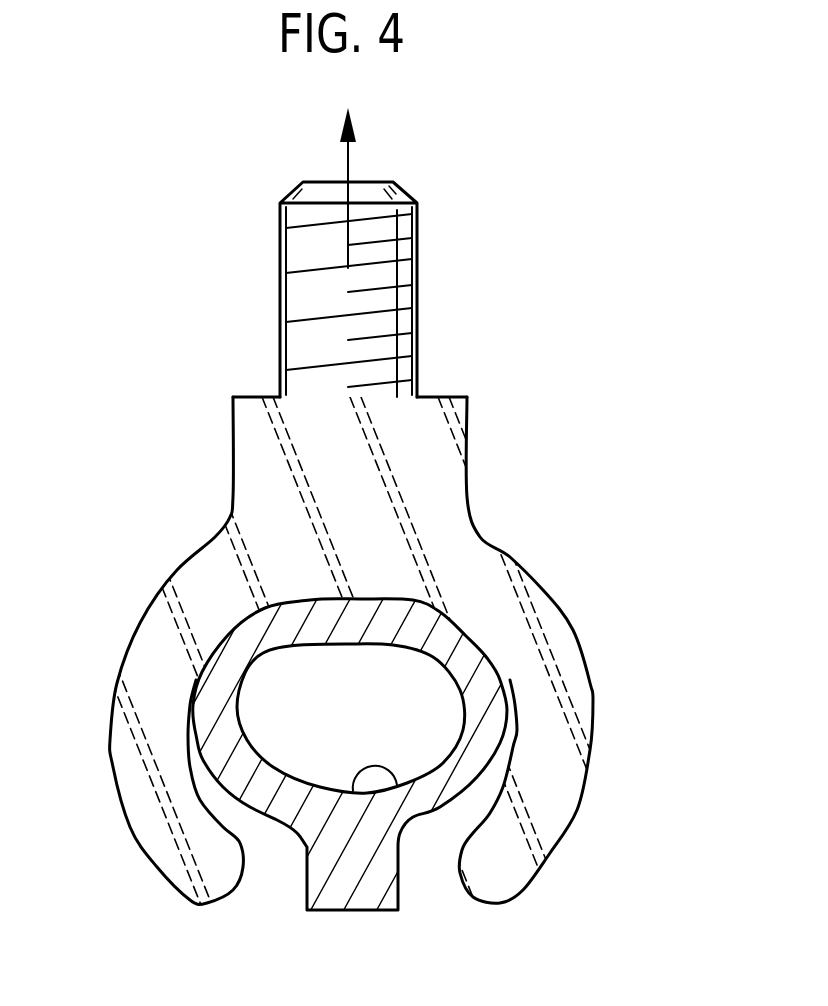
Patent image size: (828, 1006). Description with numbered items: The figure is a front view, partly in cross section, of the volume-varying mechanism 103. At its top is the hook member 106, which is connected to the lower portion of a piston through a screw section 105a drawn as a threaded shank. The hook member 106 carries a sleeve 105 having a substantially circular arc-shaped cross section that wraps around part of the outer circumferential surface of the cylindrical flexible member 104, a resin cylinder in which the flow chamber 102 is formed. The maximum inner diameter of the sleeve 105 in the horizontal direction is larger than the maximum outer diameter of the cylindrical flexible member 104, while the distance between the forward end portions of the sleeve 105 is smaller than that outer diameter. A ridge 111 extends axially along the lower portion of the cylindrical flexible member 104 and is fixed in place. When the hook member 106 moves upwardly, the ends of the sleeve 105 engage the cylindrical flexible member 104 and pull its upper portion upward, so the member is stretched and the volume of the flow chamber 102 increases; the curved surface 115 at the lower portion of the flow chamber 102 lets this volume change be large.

The flow chamber 102 is at (363, 727).
The volume-varying mechanism 103 is at (556, 308).
The cylindrical flexible member 104 is at (287, 845).
The sleeve 105 is at (133, 729).
The screw section 105a is at (419, 279).
The hook member 106 is at (471, 438).
The ridge 111 is at (360, 897).
The curved surface 115 is at (396, 782).